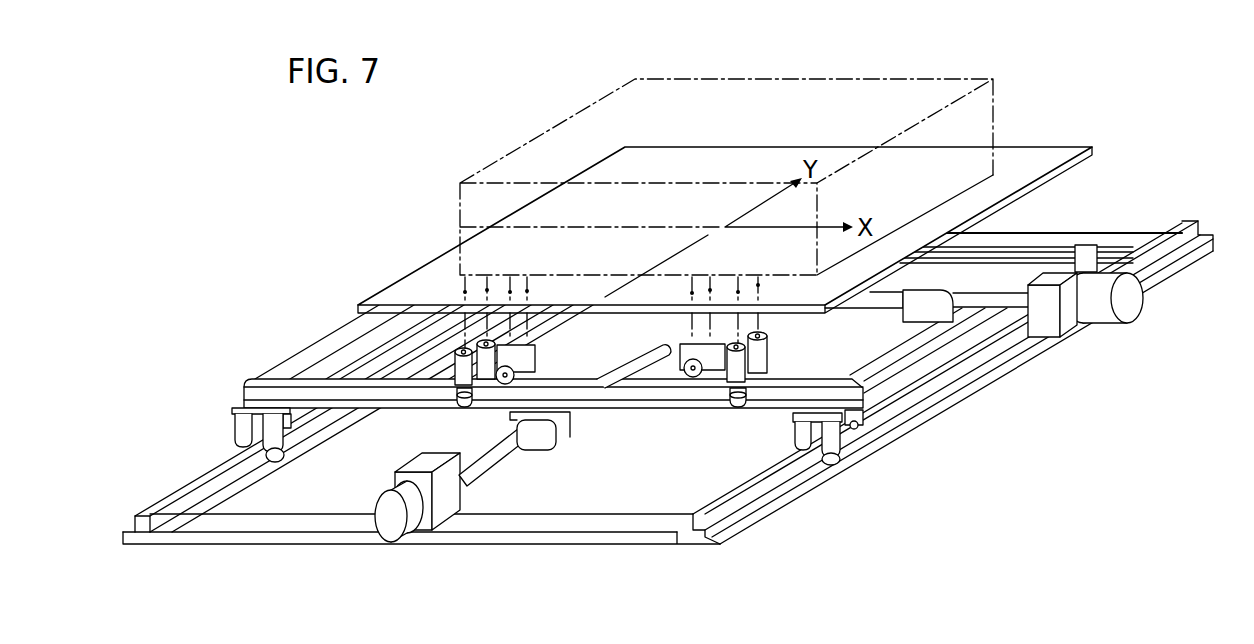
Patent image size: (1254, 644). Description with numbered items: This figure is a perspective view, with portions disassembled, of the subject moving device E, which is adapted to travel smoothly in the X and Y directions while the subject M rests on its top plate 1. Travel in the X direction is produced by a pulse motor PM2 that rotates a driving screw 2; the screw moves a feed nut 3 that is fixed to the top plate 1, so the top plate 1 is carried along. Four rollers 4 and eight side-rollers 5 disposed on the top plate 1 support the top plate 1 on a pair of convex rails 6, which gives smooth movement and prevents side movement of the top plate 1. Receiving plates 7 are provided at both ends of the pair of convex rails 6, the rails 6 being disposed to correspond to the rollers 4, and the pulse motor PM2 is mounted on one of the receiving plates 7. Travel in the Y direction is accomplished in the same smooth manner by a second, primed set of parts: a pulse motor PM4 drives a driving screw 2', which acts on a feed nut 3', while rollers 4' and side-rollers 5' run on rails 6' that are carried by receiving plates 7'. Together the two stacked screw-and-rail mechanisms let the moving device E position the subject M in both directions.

The top plate 1 is at (1023, 160).
The driving screw 2 is at (920, 355).
The driving screw 2' is at (553, 481).
The feed nut 3 is at (973, 342).
The feed nut 3' is at (527, 498).
The rollers 4 is at (557, 390).
The rollers 4' is at (579, 400).
The side-rollers 5 is at (544, 413).
The side-rollers 5' is at (531, 439).
The rails 6 is at (959, 350).
The rails 6' is at (657, 382).
The receiving plates 7 is at (631, 368).
The receiving plates 7' is at (668, 365).
The pulse motor PM2 is at (1132, 323).
The pulse motor PM4 is at (404, 538).
The subject M is at (745, 78).
The moving device E is at (1017, 488).